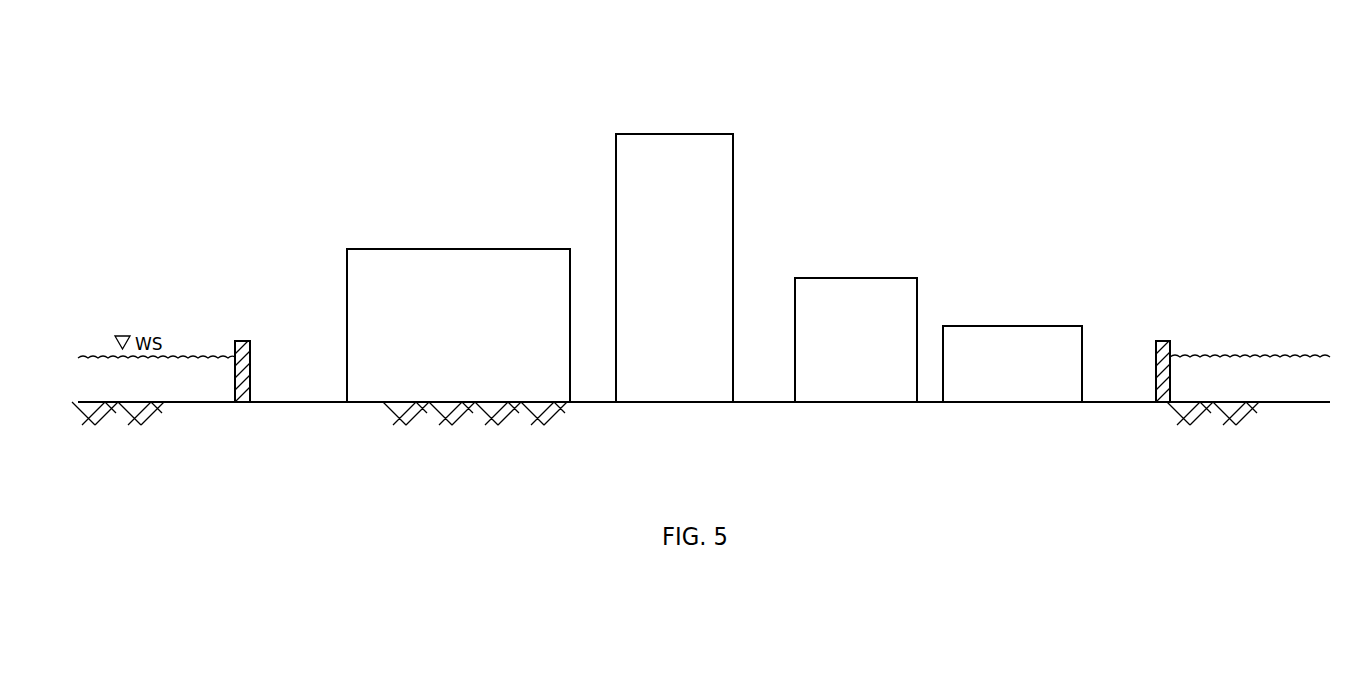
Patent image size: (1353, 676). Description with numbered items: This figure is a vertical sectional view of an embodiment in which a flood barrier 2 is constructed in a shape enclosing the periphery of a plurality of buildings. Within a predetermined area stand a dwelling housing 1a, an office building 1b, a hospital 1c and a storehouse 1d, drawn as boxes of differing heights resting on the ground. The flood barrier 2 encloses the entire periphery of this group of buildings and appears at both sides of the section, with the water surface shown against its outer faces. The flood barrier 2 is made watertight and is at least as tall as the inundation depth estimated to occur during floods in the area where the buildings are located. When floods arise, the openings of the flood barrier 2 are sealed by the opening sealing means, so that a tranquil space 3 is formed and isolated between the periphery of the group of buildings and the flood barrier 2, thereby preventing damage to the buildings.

The dwelling housing 1a is at (444, 219).
The office building 1b is at (676, 108).
The hospital 1c is at (853, 257).
The storehouse 1d is at (1019, 292).
The flood barrier 2 is at (243, 341).
The tranquil space 3 is at (1119, 323).